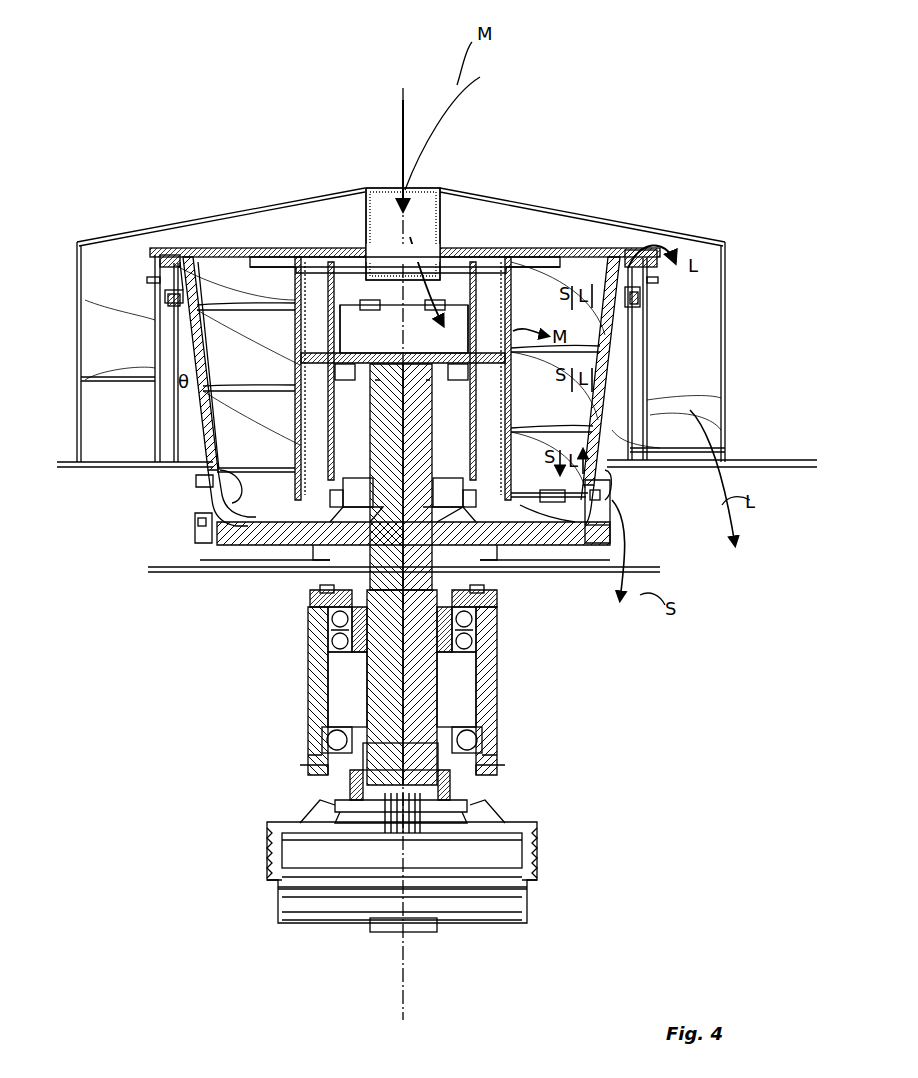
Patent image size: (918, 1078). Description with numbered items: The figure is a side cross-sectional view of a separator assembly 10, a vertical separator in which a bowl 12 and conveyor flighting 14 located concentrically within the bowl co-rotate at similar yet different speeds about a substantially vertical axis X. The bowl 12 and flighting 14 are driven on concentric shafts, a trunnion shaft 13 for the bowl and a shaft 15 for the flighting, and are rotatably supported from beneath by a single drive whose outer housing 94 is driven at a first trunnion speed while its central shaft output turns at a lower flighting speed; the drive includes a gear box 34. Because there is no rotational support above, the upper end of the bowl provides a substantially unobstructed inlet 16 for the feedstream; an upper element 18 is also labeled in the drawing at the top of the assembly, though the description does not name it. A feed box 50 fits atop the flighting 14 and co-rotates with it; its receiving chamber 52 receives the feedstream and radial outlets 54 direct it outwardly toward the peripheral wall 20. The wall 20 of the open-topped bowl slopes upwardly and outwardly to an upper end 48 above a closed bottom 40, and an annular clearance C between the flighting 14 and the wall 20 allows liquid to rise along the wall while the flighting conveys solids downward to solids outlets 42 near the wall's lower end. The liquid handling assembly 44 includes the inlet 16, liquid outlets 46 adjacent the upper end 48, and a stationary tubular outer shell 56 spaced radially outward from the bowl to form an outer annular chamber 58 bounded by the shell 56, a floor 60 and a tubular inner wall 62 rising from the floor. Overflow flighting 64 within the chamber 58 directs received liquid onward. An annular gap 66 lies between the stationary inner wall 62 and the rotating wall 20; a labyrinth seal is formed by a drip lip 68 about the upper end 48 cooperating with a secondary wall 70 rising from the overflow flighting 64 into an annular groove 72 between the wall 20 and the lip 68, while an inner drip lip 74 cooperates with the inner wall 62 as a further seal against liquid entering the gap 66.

The separator assembly 10 is at (195, 165).
The bowl 12 is at (615, 365).
The trunnion shaft 13 is at (355, 580).
The conveyor flighting 14 is at (390, 379).
The shaft 15 is at (410, 682).
The inlet 16 is at (432, 190).
The top plate 18 is at (555, 255).
The peripheral wall 20 is at (150, 355).
The gear box 34 is at (470, 850).
The closed bottom 40 is at (560, 520).
The solids outlet 42 is at (590, 520).
The liquid handling assembly 44 is at (525, 190).
The liquid outlet 46 is at (195, 255).
The upper end 48 is at (670, 232).
The feed box 50 is at (330, 268).
The receiving chamber 52 is at (403, 332).
The radial outlet 54 is at (450, 325).
The outer shell 56 is at (727, 262).
The outer annular chamber 58 is at (675, 355).
The floor 60 is at (95, 468).
The inner wall 62 is at (640, 410).
The overflow flighting 64 is at (690, 436).
The annular gap 66 is at (634, 437).
The drip lip 68 is at (650, 268).
The secondary wall 70 is at (645, 330).
The annular groove 72 is at (640, 280).
The inner drip lip 74 is at (640, 292).
The outer housing 94 is at (480, 815).
The axis X is at (405, 990).
The annular clearance C is at (215, 270).